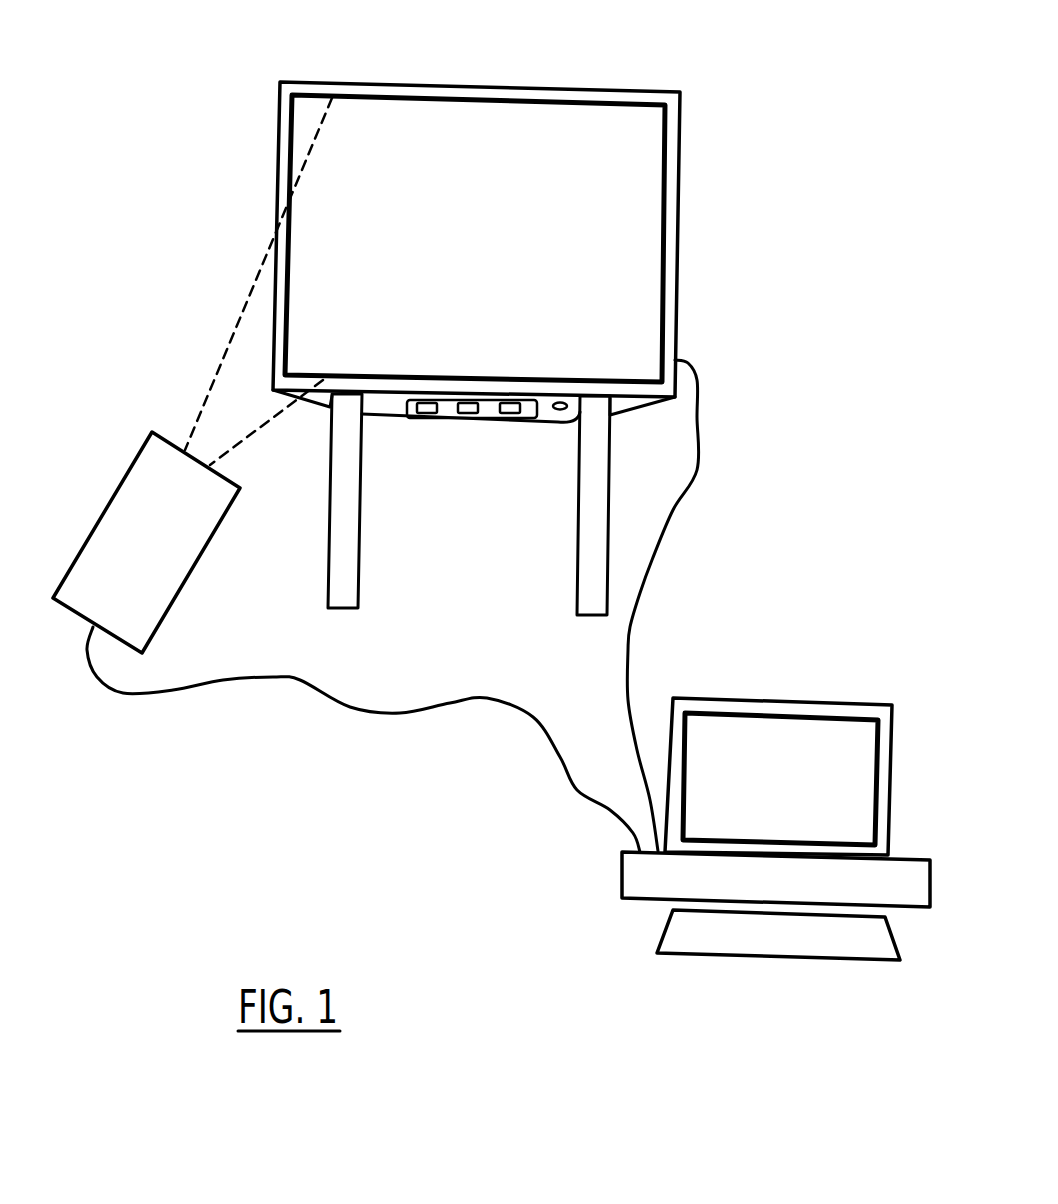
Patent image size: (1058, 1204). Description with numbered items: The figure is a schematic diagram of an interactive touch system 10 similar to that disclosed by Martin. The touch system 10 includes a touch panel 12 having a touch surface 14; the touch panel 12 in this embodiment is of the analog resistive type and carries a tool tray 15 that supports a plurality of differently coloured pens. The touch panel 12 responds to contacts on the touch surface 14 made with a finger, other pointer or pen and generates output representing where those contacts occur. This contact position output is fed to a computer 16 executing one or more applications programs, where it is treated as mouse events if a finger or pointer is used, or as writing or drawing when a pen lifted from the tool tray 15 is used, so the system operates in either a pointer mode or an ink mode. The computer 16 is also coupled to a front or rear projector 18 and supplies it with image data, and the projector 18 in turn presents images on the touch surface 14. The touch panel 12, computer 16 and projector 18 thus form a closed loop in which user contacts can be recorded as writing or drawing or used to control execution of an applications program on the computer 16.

The interactive touch system 10 is at (502, 500).
The touch panel 12 is at (640, 140).
The touch surface 14 is at (635, 295).
The tool tray 15 is at (447, 418).
The computer 16 is at (910, 873).
The projector 18 is at (190, 578).